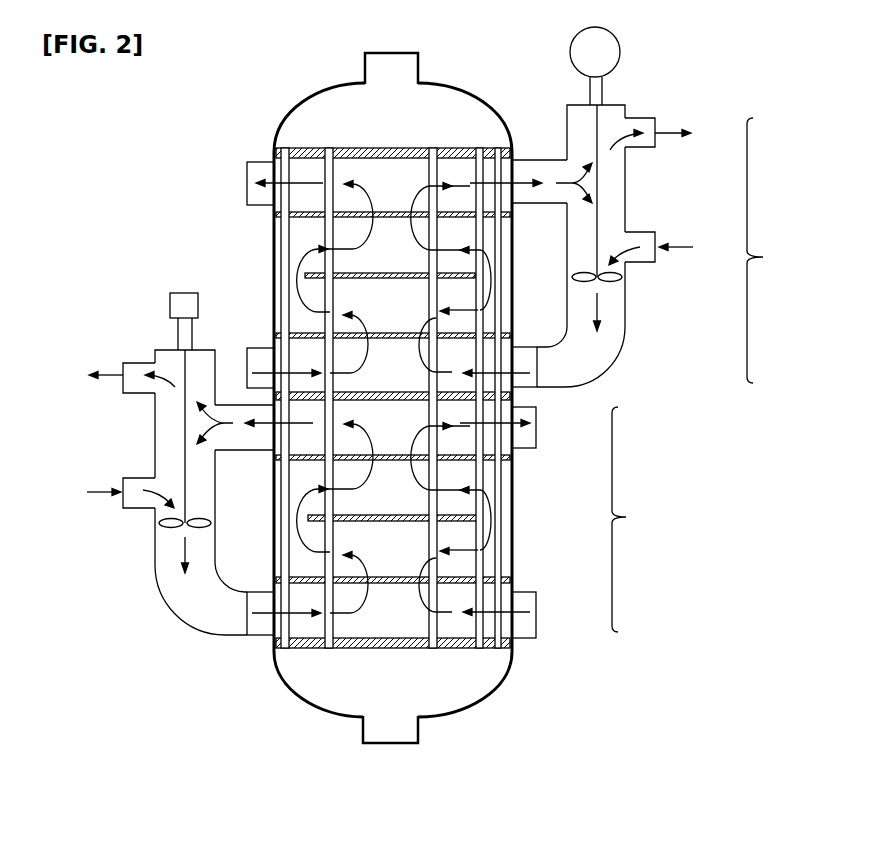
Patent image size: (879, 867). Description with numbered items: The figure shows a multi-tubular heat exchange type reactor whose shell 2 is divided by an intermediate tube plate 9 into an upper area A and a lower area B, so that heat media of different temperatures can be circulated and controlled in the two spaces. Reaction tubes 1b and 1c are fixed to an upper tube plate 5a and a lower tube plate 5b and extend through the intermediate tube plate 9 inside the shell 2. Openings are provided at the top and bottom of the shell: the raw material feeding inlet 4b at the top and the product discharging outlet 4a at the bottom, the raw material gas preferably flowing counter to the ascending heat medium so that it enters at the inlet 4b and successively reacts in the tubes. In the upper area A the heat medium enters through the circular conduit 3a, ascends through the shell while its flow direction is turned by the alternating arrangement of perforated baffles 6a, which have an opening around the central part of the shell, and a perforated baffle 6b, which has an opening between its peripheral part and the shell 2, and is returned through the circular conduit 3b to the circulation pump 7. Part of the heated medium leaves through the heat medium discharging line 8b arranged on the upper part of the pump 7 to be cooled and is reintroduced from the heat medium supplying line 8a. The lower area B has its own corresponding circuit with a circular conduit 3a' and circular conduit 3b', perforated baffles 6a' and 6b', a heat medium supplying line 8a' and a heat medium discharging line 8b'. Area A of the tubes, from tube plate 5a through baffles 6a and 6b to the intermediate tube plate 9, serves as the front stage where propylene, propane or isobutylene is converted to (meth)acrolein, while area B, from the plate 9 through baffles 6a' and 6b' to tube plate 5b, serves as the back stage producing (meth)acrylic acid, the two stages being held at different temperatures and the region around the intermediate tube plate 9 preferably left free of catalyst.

The reactor 2 is at (468, 90).
The raw material feeding inlet 4b is at (387, 52).
The product discharging outlet 4a is at (387, 745).
The tube plate 5a is at (423, 147).
The tube plate 5b is at (360, 649).
The perforated baffle 6a is at (393, 264).
The perforated baffle 6b is at (390, 260).
The perforated baffle 6a' is at (393, 503).
The perforated baffle 6b' is at (392, 503).
The intermediate tube plate 9 is at (401, 392).
The reaction tube 1c is at (281, 128).
The reaction tube 1b is at (320, 128).
The circular conduit 3a is at (381, 170).
The circular conduit 3b is at (383, 354).
The circular conduit 3a' is at (390, 441).
The circular conduit 3b' is at (405, 629).
The circulation pump 7 is at (581, 207).
The heat medium supplying line 8a is at (664, 248).
The heat medium discharging line 8b is at (666, 134).
The heat medium supplying line 8a' is at (113, 493).
The heat medium discharging line 8b' is at (113, 378).
The upper area A is at (767, 250).
The lower area B is at (406, 464).